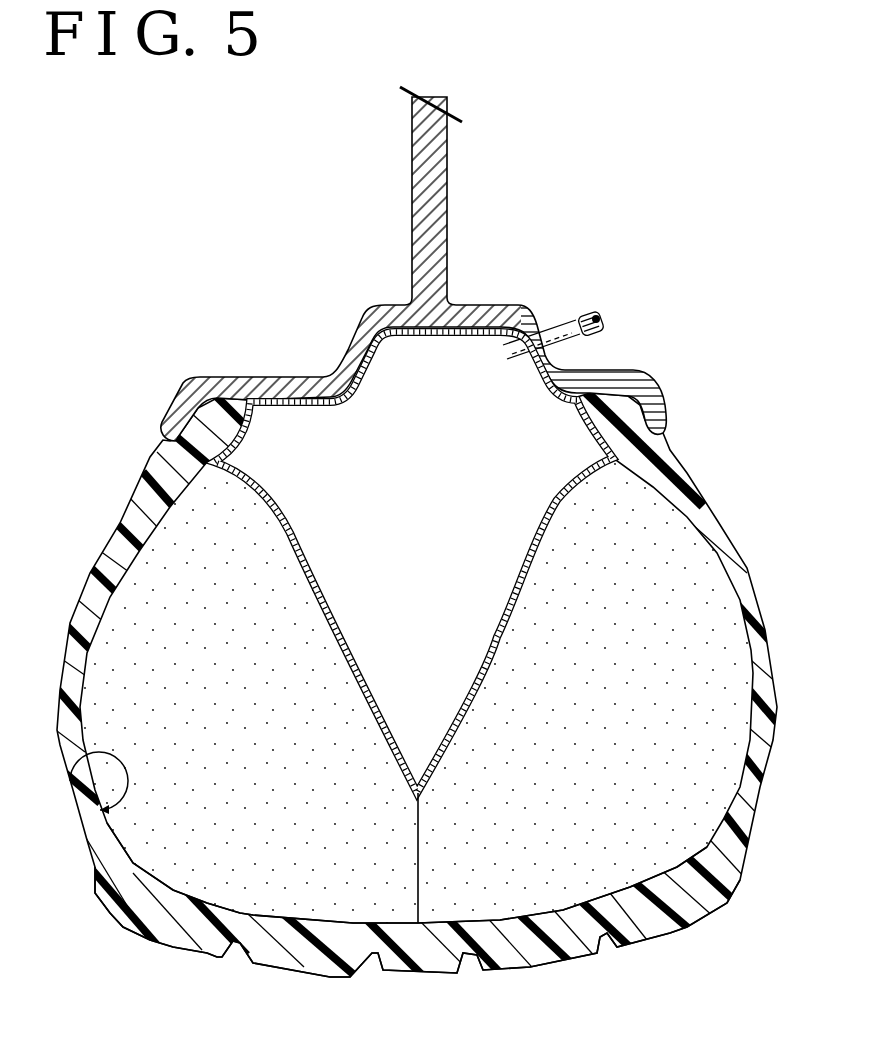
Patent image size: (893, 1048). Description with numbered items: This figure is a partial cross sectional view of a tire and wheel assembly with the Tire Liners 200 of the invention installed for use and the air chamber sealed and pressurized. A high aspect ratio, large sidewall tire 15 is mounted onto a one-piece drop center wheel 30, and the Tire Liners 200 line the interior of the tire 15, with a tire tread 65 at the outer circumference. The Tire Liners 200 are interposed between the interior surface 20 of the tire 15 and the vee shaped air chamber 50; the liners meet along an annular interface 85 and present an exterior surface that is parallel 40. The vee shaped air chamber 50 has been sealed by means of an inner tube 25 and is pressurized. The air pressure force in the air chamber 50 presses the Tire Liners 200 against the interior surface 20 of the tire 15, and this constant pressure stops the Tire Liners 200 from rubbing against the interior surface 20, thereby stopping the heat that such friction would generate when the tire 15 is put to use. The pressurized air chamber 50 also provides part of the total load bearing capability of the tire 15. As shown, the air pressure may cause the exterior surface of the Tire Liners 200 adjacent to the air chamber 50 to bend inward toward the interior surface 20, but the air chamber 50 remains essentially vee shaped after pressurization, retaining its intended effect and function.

The high aspect ratio/large sidewall tire 15 is at (130, 510).
The interior surface 20 is at (72, 783).
The inner tube 25 is at (493, 647).
The one-piece drop center wheel 30 is at (412, 222).
The exterior surface that is parallel 40 is at (214, 787).
The vee shaped air chamber 50 is at (440, 480).
The tire tread 65 is at (330, 977).
The annular interface 85 is at (418, 857).
The Tire Liners 200 is at (255, 717).